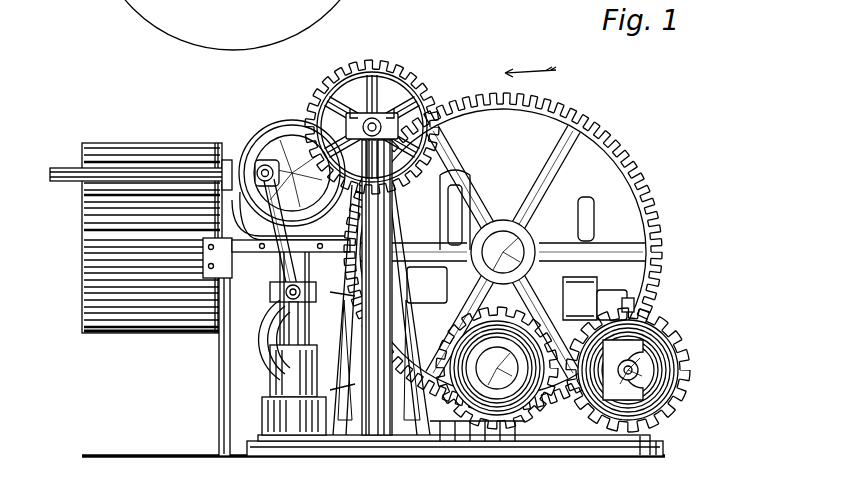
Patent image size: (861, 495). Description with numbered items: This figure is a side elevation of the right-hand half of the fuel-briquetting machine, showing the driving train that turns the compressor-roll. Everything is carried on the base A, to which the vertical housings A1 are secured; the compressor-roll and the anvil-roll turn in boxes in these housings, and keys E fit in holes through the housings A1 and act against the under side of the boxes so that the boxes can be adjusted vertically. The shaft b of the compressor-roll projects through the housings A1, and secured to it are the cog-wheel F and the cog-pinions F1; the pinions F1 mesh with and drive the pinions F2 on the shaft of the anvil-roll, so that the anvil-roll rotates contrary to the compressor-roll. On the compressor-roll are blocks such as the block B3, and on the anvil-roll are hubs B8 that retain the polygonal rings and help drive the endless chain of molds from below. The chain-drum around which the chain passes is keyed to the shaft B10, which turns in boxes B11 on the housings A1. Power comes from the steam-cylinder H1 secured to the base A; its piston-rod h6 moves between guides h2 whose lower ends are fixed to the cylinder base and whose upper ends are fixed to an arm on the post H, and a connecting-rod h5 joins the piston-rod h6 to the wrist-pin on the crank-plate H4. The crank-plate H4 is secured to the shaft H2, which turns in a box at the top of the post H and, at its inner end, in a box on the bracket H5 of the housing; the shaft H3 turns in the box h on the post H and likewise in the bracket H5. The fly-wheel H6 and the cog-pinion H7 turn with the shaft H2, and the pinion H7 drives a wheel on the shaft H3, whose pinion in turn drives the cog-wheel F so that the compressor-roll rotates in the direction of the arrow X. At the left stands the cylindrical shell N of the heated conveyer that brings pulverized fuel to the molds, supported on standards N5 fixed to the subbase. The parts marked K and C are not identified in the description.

The base A is at (373, 459).
The vertical housings A1 is at (591, 258).
The cylindrical shell N is at (142, 200).
The standards N5 is at (224, 392).
The motor shaft K is at (128, 166).
The post H is at (394, 335).
The steam-cylinder H1 is at (302, 420).
The shaft H2 is at (293, 150).
The shaft H3 is at (366, 105).
The crank-plate H4 is at (282, 160).
The bracket H5 is at (351, 211).
The fly-wheel H6 is at (250, 152).
The cog-pinion H7 is at (400, 98).
The box h is at (396, 89).
The guides h2 is at (310, 262).
The connecting-rod h5 is at (276, 262).
The piston-rod h6 is at (282, 330).
The cog-wheel F is at (600, 130).
The cog-pinions F1 is at (515, 180).
The cog-pinions F2 is at (486, 414).
The shaft b is at (503, 252).
The standard column C is at (381, 287).
The keys E is at (610, 302).
The arrow X is at (514, 79).
The block B3 is at (450, 368).
The hubs B8 is at (680, 338).
The shaft B10 is at (618, 380).
The boxes B11 is at (648, 368).